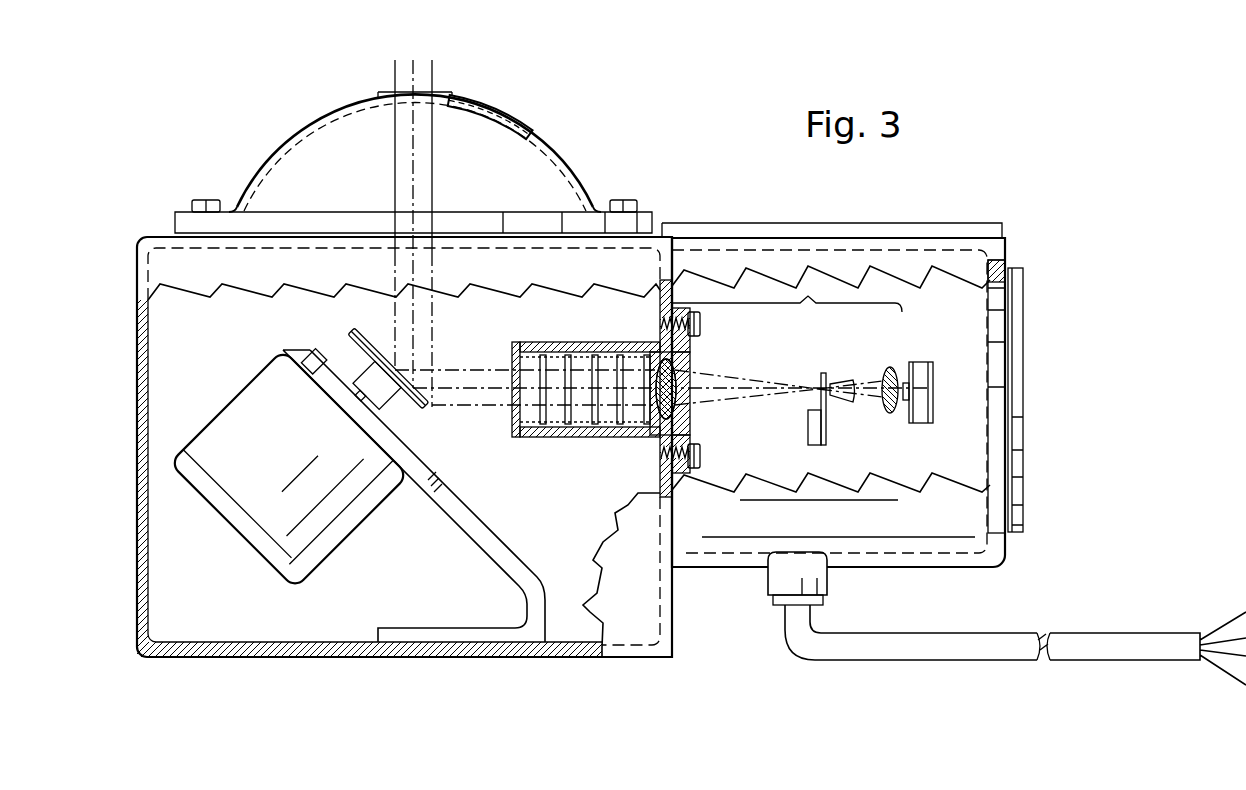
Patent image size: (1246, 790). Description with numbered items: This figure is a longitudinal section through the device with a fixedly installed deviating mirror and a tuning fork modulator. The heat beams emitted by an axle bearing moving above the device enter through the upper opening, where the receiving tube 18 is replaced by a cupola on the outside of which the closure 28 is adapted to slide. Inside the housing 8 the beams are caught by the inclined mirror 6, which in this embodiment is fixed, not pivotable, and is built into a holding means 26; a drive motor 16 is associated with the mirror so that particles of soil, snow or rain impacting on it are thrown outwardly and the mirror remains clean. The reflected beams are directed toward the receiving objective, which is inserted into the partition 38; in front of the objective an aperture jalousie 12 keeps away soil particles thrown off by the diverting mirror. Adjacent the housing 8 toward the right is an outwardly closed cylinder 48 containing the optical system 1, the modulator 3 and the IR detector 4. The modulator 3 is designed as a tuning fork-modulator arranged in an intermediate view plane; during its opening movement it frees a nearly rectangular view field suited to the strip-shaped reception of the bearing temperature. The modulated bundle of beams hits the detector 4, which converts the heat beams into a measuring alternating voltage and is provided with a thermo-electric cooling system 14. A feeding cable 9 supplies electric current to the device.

The optical system 1 is at (823, 359).
The modulator 3 is at (808, 427).
The IR detector 4 is at (913, 386).
The mirror 6 is at (432, 400).
The housing 8 is at (318, 652).
The feeding cable 9 is at (938, 648).
The aperture jalousie 12 is at (555, 415).
The thermo-electric cooling system 14 is at (918, 407).
The drive motor 16 is at (337, 536).
The receiving tube 18 is at (531, 156).
The holding means 26 is at (458, 513).
The closure 28 is at (484, 105).
The partition 38 is at (657, 487).
The cylinder 48 is at (922, 556).